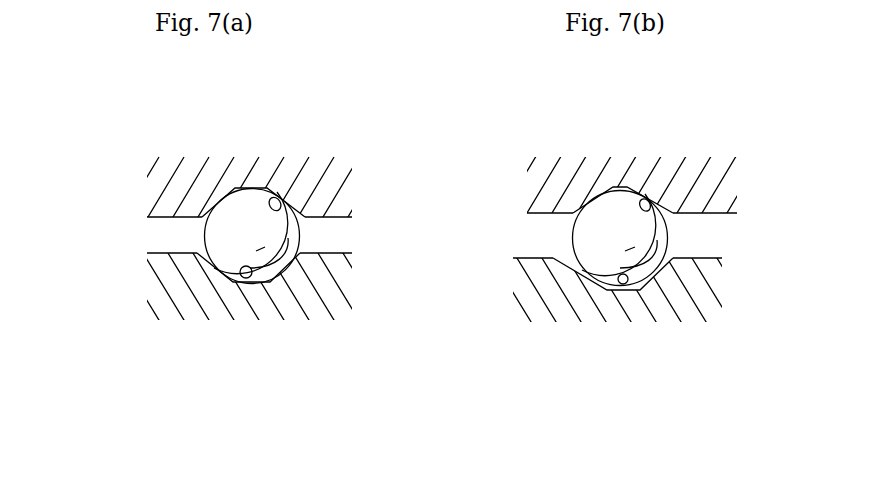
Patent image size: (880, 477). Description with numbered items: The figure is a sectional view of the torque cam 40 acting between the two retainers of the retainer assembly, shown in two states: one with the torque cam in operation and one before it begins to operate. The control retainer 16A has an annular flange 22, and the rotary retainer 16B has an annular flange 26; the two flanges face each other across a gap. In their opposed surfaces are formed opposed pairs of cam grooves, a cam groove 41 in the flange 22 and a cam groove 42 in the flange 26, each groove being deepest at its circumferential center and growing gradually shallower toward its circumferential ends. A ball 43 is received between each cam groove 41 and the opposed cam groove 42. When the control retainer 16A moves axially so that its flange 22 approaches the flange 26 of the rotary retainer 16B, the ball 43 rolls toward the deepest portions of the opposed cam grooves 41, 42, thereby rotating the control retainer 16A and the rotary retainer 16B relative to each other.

In FIG. 7A, the control retainer 16A is at (165, 149).
In FIG. 7B, the control retainer 16A is at (558, 157).
In FIG. 7A, the rotary retainer 16B is at (149, 282).
In FIG. 7B, the rotary retainer 16B is at (506, 283).
In FIG. 7A, the annular flange 22 is at (157, 195).
In FIG. 7B, the annular flange 22 is at (525, 188).
In FIG. 7A, the annular flange 26 is at (187, 312).
In FIG. 7B, the annular flange 26 is at (555, 307).
In FIG. 7A, the torque cam 40 is at (243, 178).
In FIG. 7B, the torque cam 40 is at (622, 181).
In FIG. 7A, the cam groove 41 is at (278, 198).
In FIG. 7B, the cam groove 41 is at (648, 200).
In FIG. 7A, the cam groove 42 is at (247, 278).
In FIG. 7B, the cam groove 42 is at (625, 284).
In FIG. 7A, the ball 43 is at (290, 262).
In FIG. 7B, the ball 43 is at (663, 270).